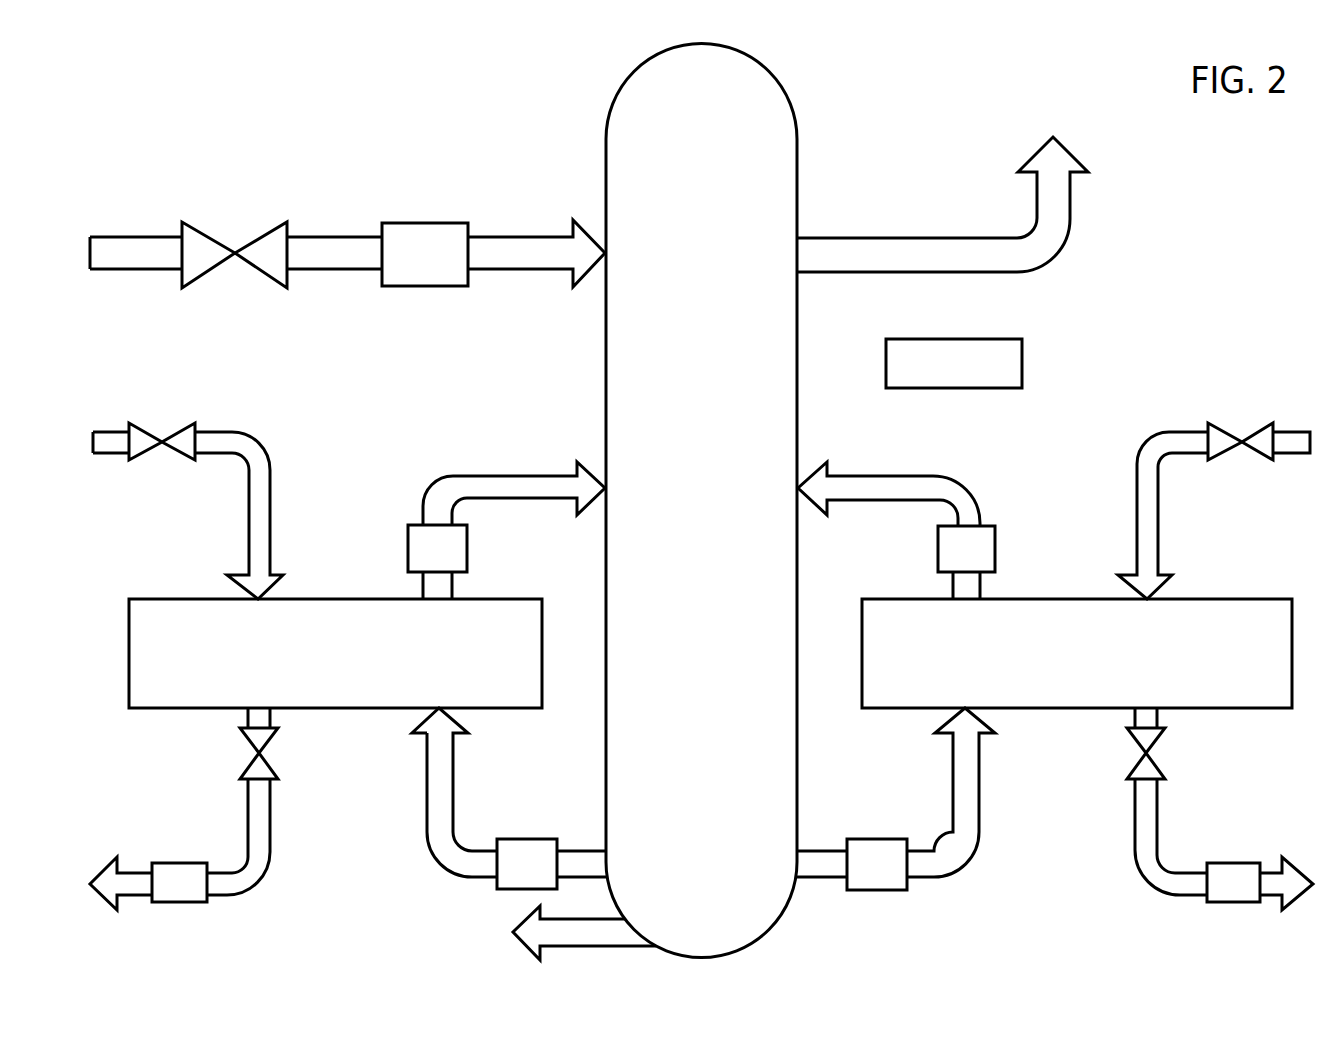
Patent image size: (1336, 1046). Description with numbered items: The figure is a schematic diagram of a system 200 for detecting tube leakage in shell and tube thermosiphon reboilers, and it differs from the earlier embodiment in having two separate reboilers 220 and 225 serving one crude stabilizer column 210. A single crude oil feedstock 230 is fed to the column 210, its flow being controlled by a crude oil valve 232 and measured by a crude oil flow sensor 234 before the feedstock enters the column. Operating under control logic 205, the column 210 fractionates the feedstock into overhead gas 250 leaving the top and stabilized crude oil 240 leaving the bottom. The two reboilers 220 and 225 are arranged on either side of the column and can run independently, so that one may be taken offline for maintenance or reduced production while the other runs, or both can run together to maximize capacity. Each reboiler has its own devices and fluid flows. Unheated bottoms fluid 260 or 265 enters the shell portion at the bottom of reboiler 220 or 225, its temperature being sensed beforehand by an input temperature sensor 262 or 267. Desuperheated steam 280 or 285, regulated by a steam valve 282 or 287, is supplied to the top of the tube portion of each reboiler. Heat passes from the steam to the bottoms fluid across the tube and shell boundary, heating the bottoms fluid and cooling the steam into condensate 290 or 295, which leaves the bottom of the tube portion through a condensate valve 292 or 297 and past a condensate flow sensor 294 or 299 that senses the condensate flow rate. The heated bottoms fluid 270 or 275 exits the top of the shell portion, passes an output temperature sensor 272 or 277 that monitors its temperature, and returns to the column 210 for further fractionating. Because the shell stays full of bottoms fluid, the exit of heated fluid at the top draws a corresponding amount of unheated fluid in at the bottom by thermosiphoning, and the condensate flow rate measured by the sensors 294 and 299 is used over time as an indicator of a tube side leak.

The system 200 is at (1197, 227).
The control logic 205 is at (934, 377).
The crude stabilizer column 210 is at (680, 516).
The reboiler 220 is at (315, 671).
The reboiler 225 is at (1056, 671).
The crude oil feedstock 230 is at (347, 262).
The crude oil valve 232 is at (212, 233).
The crude oil flow sensor 234 is at (405, 266).
The stabilized crude oil 240 is at (559, 933).
The overhead gas 250 is at (942, 204).
The unheated bottoms fluid 260 is at (489, 792).
The input temperature sensor 262 is at (507, 874).
The unheated bottoms fluid 265 is at (914, 792).
The input temperature sensor 267 is at (857, 874).
The heated bottoms fluid 270 is at (514, 499).
The output temperature sensor 272 is at (417, 559).
The heated bottoms fluid 275 is at (889, 499).
The output temperature sensor 277 is at (946, 559).
The desuperheated steam 280 is at (188, 515).
The steam valve 282 is at (140, 422).
The desuperheated steam 285 is at (1214, 515).
The steam valve 287 is at (1220, 422).
The condensate 290 is at (180, 859).
The condensate valve 292 is at (202, 764).
The condensate flow sensor 294 is at (160, 894).
The condensate 295 is at (1224, 859).
The condensate valve 297 is at (1162, 764).
The condensate flow sensor 299 is at (1213, 894).